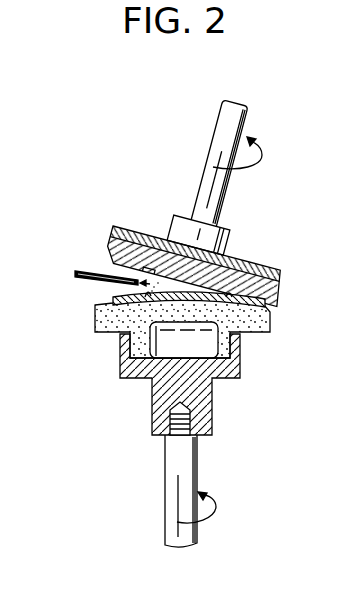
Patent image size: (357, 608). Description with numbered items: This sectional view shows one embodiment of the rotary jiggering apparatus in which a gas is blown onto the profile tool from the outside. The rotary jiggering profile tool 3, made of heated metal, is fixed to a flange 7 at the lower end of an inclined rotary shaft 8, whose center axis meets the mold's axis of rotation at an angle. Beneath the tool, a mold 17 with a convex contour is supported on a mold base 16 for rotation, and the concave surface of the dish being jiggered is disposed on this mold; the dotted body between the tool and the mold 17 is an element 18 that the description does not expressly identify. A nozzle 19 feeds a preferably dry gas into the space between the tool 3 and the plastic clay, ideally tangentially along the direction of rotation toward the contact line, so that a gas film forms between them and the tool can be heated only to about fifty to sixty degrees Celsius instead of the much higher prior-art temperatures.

The rotary jiggering profile tool 3 is at (102, 242).
The flange 7 is at (134, 232).
The rotary shaft 8 is at (211, 207).
The mold base 16 is at (152, 395).
The mold 17 is at (117, 336).
The pad 18 is at (93, 325).
The nozzle 19 is at (80, 270).